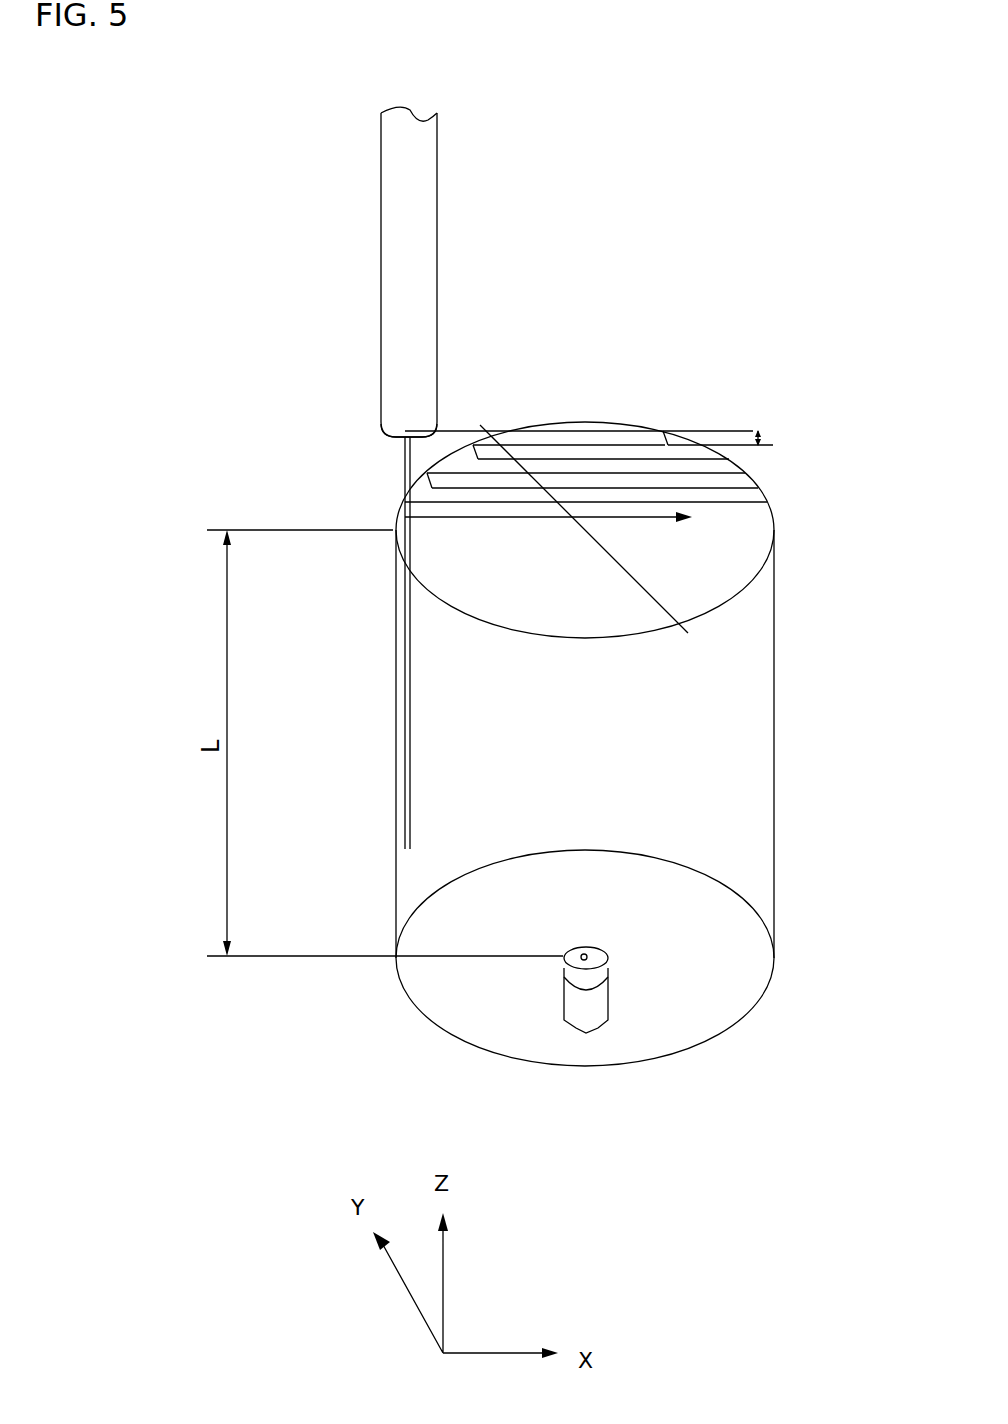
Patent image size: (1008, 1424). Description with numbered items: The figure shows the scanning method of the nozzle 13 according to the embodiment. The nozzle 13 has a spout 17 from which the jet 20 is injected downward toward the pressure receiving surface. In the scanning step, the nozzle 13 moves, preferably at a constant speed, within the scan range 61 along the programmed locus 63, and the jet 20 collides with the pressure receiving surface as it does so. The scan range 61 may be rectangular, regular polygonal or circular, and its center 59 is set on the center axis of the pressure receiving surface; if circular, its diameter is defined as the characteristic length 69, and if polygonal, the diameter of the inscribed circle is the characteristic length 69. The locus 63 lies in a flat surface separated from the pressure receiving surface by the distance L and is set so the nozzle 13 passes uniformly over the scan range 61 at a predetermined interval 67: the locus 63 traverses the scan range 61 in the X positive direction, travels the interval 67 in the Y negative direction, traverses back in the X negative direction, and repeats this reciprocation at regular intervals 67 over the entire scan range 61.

The nozzle 13 is at (438, 358).
The spout 17 is at (402, 430).
The jet 20 is at (413, 778).
The center 59 is at (582, 958).
The scan range 61 is at (774, 522).
The locus 63 is at (613, 430).
The interval 67 is at (890, 420).
The characteristic length 69 is at (602, 546).